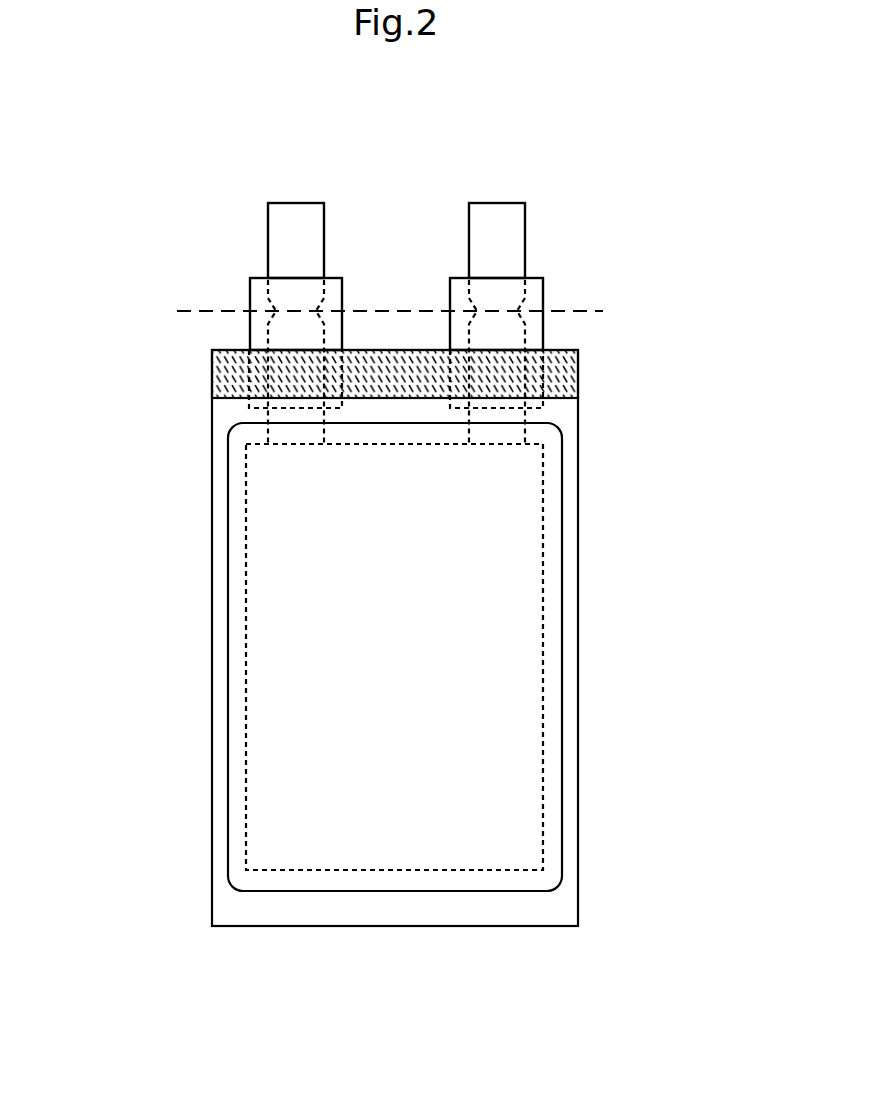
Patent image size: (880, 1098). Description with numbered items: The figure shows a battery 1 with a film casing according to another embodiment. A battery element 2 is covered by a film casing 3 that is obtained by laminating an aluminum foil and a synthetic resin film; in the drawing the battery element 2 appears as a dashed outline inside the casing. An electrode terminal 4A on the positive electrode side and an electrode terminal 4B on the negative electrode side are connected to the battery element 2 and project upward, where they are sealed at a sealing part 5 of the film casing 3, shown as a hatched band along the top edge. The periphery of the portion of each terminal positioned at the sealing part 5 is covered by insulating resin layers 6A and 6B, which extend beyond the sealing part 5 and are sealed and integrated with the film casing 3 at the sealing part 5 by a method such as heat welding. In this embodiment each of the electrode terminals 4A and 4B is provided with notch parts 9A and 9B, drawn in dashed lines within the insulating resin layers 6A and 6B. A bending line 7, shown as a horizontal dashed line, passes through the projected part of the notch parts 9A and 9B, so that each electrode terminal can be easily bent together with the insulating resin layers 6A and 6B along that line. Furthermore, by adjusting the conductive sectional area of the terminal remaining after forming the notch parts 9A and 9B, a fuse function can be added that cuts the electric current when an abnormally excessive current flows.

The battery with a film casing 1 is at (80, 155).
The battery element 2 is at (282, 647).
The film casing 3 is at (572, 658).
The electrode terminal on the positive electrode side 4A is at (308, 227).
The electrode terminal on the negative electrode side 4B is at (494, 226).
The sealing part 5 is at (568, 383).
The insulating resin layer 6A is at (338, 292).
The insulating resin layer 6B is at (535, 290).
The bending line 7 is at (193, 309).
The notch part 9A is at (268, 310).
The notch part 9B is at (528, 310).